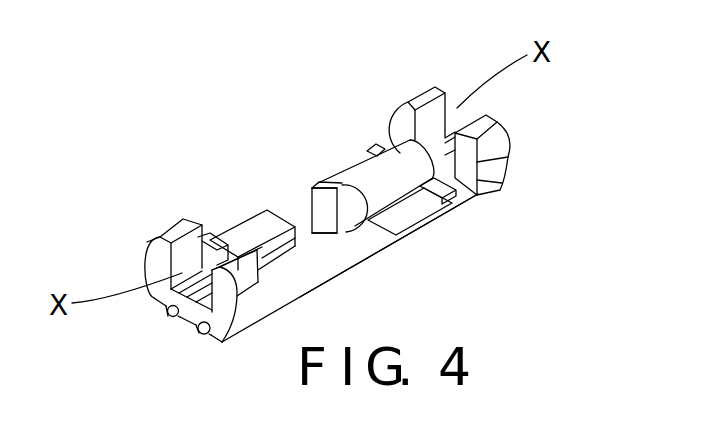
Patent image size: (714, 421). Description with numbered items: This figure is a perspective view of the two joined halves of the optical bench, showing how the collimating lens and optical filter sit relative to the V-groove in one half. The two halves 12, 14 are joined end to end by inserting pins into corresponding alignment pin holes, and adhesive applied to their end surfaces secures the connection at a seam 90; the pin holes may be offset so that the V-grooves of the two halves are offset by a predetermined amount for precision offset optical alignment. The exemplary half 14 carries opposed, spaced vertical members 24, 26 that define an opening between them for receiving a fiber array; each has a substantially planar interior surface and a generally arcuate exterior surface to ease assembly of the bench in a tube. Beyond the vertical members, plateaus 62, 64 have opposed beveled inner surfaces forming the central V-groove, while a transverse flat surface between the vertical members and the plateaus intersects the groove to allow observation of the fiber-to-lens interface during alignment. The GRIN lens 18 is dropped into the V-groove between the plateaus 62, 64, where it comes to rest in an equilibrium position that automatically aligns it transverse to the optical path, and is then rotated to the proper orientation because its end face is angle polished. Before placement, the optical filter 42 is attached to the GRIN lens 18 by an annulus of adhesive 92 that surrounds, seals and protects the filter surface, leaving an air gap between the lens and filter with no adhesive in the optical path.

The half 12 is at (139, 229).
The half 14 is at (470, 215).
The GRIN lens 18 is at (378, 173).
The vertical member 24 is at (408, 102).
The vertical member 26 is at (507, 137).
The optical filter 42 is at (298, 213).
The plateau 62 is at (340, 180).
The plateau 64 is at (433, 223).
The seam 90 is at (345, 259).
The annulus of adhesive 92 is at (312, 186).